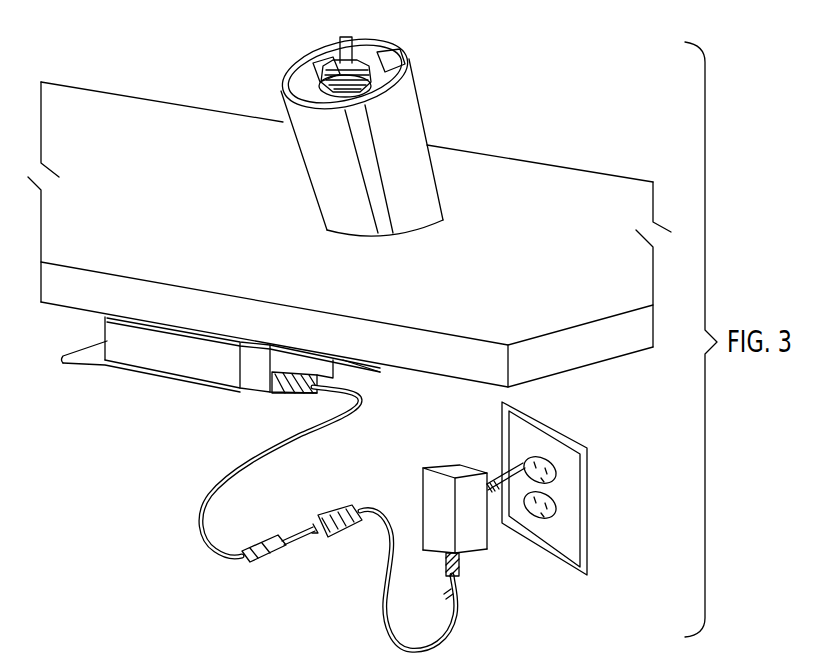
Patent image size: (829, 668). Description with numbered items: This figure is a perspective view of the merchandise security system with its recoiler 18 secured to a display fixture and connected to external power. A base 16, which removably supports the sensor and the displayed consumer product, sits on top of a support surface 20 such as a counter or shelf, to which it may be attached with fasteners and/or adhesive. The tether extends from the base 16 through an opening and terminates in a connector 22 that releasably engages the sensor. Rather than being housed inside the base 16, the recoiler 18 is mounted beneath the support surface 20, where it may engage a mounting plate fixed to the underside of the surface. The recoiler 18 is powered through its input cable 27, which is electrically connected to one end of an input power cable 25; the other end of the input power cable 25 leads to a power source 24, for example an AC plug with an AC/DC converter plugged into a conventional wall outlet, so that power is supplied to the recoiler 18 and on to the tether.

The base 16 is at (427, 117).
The connector 22 is at (340, 60).
The support surface 20 is at (349, 234).
The recoiler 18 is at (147, 358).
The input cable 27 is at (202, 523).
The input power cable 25 is at (378, 592).
The power source 24 is at (472, 545).